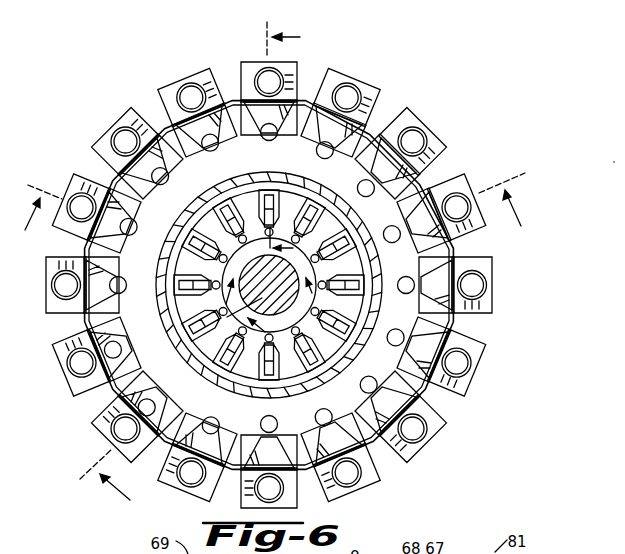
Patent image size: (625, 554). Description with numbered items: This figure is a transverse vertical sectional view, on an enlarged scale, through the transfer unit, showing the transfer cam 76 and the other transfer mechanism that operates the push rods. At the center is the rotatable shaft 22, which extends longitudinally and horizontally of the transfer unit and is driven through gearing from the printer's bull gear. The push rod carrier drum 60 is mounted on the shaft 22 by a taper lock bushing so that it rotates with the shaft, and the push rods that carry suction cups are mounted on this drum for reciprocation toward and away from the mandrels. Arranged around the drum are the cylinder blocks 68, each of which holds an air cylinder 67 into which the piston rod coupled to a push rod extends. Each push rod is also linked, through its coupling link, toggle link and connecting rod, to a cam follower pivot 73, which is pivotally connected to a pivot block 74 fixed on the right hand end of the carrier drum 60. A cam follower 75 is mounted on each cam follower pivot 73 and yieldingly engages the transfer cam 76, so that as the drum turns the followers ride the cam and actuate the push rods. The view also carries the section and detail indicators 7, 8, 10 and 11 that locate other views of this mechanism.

The section line 7- 7 is at (296, 38).
The section line 8- 8 is at (504, 208).
The section line 10- 10 is at (119, 483).
The section line 11- 11 is at (34, 220).
The rotatable shaft 22 is at (178, 344).
The push rod carrier drum 60 is at (213, 374).
The air cylinder 67 is at (131, 129).
The cylinder block 68 is at (105, 148).
The cam follower pivot 73 is at (157, 125).
The pivot block 74 is at (110, 184).
The cam follower 75 is at (267, 141).
The transfer cam 76 is at (155, 373).